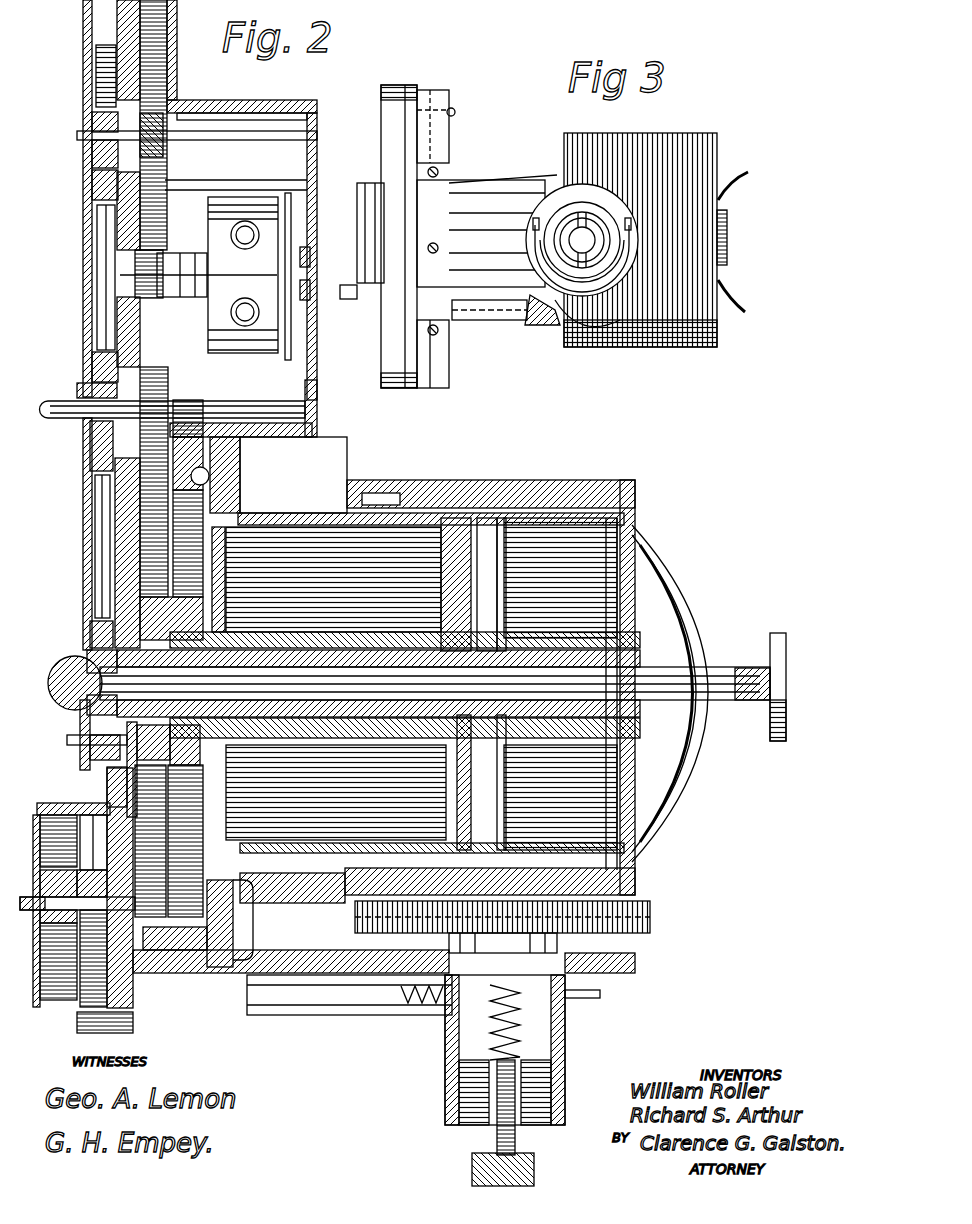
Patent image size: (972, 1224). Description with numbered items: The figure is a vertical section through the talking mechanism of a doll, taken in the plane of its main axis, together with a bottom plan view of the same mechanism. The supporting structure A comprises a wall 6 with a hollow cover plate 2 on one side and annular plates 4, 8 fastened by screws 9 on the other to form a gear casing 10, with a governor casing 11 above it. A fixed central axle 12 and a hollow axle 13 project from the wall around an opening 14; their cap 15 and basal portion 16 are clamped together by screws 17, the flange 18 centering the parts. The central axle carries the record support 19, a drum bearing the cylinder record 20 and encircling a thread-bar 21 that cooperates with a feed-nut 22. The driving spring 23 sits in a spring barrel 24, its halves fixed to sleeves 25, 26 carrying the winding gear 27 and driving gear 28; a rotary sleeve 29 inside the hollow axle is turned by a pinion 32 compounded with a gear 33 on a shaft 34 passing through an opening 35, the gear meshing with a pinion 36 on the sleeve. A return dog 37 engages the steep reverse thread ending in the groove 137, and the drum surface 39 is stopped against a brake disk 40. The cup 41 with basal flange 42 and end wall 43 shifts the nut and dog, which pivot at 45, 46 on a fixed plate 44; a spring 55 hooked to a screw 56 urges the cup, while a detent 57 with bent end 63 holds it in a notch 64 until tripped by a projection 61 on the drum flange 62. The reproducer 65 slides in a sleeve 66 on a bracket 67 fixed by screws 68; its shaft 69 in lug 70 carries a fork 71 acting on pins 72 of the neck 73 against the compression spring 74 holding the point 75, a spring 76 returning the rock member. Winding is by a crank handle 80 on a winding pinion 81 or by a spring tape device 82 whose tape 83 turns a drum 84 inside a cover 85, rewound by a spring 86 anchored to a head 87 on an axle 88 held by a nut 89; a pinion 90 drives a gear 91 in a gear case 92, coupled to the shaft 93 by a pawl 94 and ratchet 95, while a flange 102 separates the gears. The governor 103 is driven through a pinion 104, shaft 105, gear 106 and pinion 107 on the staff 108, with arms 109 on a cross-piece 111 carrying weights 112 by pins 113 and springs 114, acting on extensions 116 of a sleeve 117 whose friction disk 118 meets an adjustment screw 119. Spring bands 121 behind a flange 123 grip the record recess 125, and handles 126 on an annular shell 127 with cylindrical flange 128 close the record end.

In FIG. 2, the cover plate 2 is at (83, 246).
In FIG. 2, the annular plate 4 is at (205, 960).
In FIG. 3, the annular plate 4 is at (430, 88).
In FIG. 2, the wall 6 is at (96, 62).
In FIG. 2, the annular plate 8 is at (215, 480).
In FIG. 3, the annular plate 8 is at (449, 147).
In FIG. 2, the screws 9 is at (230, 965).
In FIG. 3, the screws 9 is at (455, 112).
In FIG. 2, the gear casing 10 is at (250, 452).
In FIG. 2, the governor casing 11 is at (283, 101).
In FIG. 2, the central axle 12 is at (725, 700).
In FIG. 2, the hollow axle 13 is at (60, 685).
In FIG. 2, the opening 14 is at (115, 600).
In FIG. 2, the cap 15 is at (78, 705).
In FIG. 2, the basal portion 16 is at (88, 632).
In FIG. 2, the screws 17 is at (67, 740).
In FIG. 2, the flange 18 is at (90, 768).
In FIG. 2, the record support 19 is at (606, 757).
In FIG. 2, the record 20 is at (610, 482).
In FIG. 3, the record 20 is at (705, 133).
In FIG. 2, the thread-bar 21 is at (540, 655).
In FIG. 2, the feed-nut 22 is at (520, 640).
In FIG. 2, the driving spring 23 is at (320, 540).
In FIG. 2, the spring barrel 24 is at (300, 520).
In FIG. 2, the sleeve 25 is at (240, 625).
In FIG. 2, the sleeve 26 is at (455, 518).
In FIG. 2, the winding gear 27 is at (200, 450).
In FIG. 2, the driving gear 28 is at (95, 490).
In FIG. 2, the rotary sleeve 29 is at (260, 740).
In FIG. 2, the pinion 32 is at (165, 380).
In FIG. 2, the gear 33 is at (98, 192).
In FIG. 2, the shaft 34 is at (50, 420).
In FIG. 2, the opening 35 is at (152, 370).
In FIG. 2, the pinion 36 is at (75, 660).
In FIG. 2, the dog 37 is at (508, 728).
In FIG. 2, the friction surface 39 is at (660, 740).
In FIG. 3, the friction surface 39 is at (727, 222).
In FIG. 2, the brake disk 40 is at (770, 650).
In FIG. 3, the brake disk 40 is at (727, 262).
In FIG. 2, the cup 41 is at (415, 510).
In FIG. 2, the basal flange 42 is at (290, 445).
In FIG. 2, the end wall 43 is at (506, 770).
In FIG. 2, the fixed plate 44 is at (500, 520).
In FIG. 2, the pivot 45 is at (545, 600).
In FIG. 2, the pivot 46 is at (565, 766).
In FIG. 2, the spring 55 is at (506, 805).
In FIG. 2, the screw 56 is at (506, 822).
In FIG. 2, the detent 57 is at (285, 920).
In FIG. 3, the detent 57 is at (450, 300).
In FIG. 2, the projection 61 is at (345, 880).
In FIG. 2, the basal flange 62 is at (365, 493).
In FIG. 2, the bent end 63 is at (280, 885).
In FIG. 2, the notch 64 is at (212, 970).
In FIG. 2, the reproducer 65 is at (652, 915).
In FIG. 3, the reproducer 65 is at (665, 347).
In FIG. 2, the sleeve 66 is at (565, 1092).
In FIG. 3, the sleeve 66 is at (565, 330).
In FIG. 2, the reproducer bracket 67 is at (635, 965).
In FIG. 3, the reproducer bracket 67 is at (640, 200).
In FIG. 2, the screws 68 is at (190, 975).
In FIG. 3, the screws 68 is at (436, 178).
In FIG. 2, the shaft 69 is at (420, 1000).
In FIG. 3, the shaft 69 is at (535, 318).
In FIG. 2, the lug 70 is at (300, 1012).
In FIG. 3, the lug 70 is at (490, 308).
In FIG. 2, the fork 71 is at (428, 1002).
In FIG. 3, the fork 71 is at (615, 335).
In FIG. 2, the pins 72 is at (437, 1002).
In FIG. 3, the pins 72 is at (530, 235).
In FIG. 2, the neck 73 is at (520, 975).
In FIG. 3, the neck 73 is at (570, 215).
In FIG. 2, the compression spring 74 is at (530, 1080).
In FIG. 2, the reproducer point 75 is at (635, 860).
In FIG. 2, the spring 76 is at (405, 1000).
In FIG. 3, the spring 76 is at (545, 325).
In FIG. 2, the crank handle 80 is at (348, 300).
In FIG. 3, the winding pinion 81 is at (430, 300).
In FIG. 2, the spring tape device 82 is at (45, 1005).
In FIG. 2, the tape 83 is at (62, 1005).
In FIG. 2, the drum 84 is at (125, 945).
In FIG. 2, the cover 85 is at (357, 230).
In FIG. 2, the spring 86 is at (90, 1010).
In FIG. 2, the head 87 is at (35, 900).
In FIG. 2, the axle 88 is at (130, 1030).
In FIG. 2, the nut 89 is at (70, 1054).
In FIG. 2, the pinion 90 is at (128, 944).
In FIG. 2, the gear 91 is at (120, 836).
In FIG. 2, the gear case 92 is at (110, 1035).
In FIG. 2, the shaft 93 is at (348, 300).
In FIG. 2, the pawl 94 is at (156, 841).
In FIG. 2, the ratchet 95 is at (100, 925).
In FIG. 2, the flange 102 is at (192, 420).
In FIG. 2, the governor 103 is at (160, 250).
In FIG. 2, the pinion 104 is at (100, 154).
In FIG. 2, the shaft 105 is at (80, 134).
In FIG. 2, the gear 106 is at (160, 74).
In FIG. 2, the pinion 107 is at (160, 262).
In FIG. 2, the governor staff 108 is at (118, 283).
In FIG. 2, the arms 109 is at (240, 262).
In FIG. 2, the cross-piece 111 is at (198, 326).
In FIG. 2, the weights 112 is at (288, 355).
In FIG. 2, the pins 113 is at (228, 232).
In FIG. 2, the spiral springs 114 is at (247, 222).
In FIG. 2, the lateral extensions 116 is at (177, 282).
In FIG. 2, the sleeve 117 is at (310, 265).
In FIG. 2, the friction disk 118 is at (305, 185).
In FIG. 2, the adjustment screw 119 is at (312, 305).
In FIG. 2, the spring bands 121 is at (395, 480).
In FIG. 2, the flange 123 is at (420, 470).
In FIG. 2, the recess 125 is at (390, 480).
In FIG. 2, the handles 126 is at (690, 580).
In FIG. 2, the annular shell 127 is at (650, 530).
In FIG. 2, the cylindrical flange 128 is at (635, 485).
In FIG. 2, the annular groove 137 is at (340, 745).
In FIG. 2, the supporting structure A is at (83, 530).